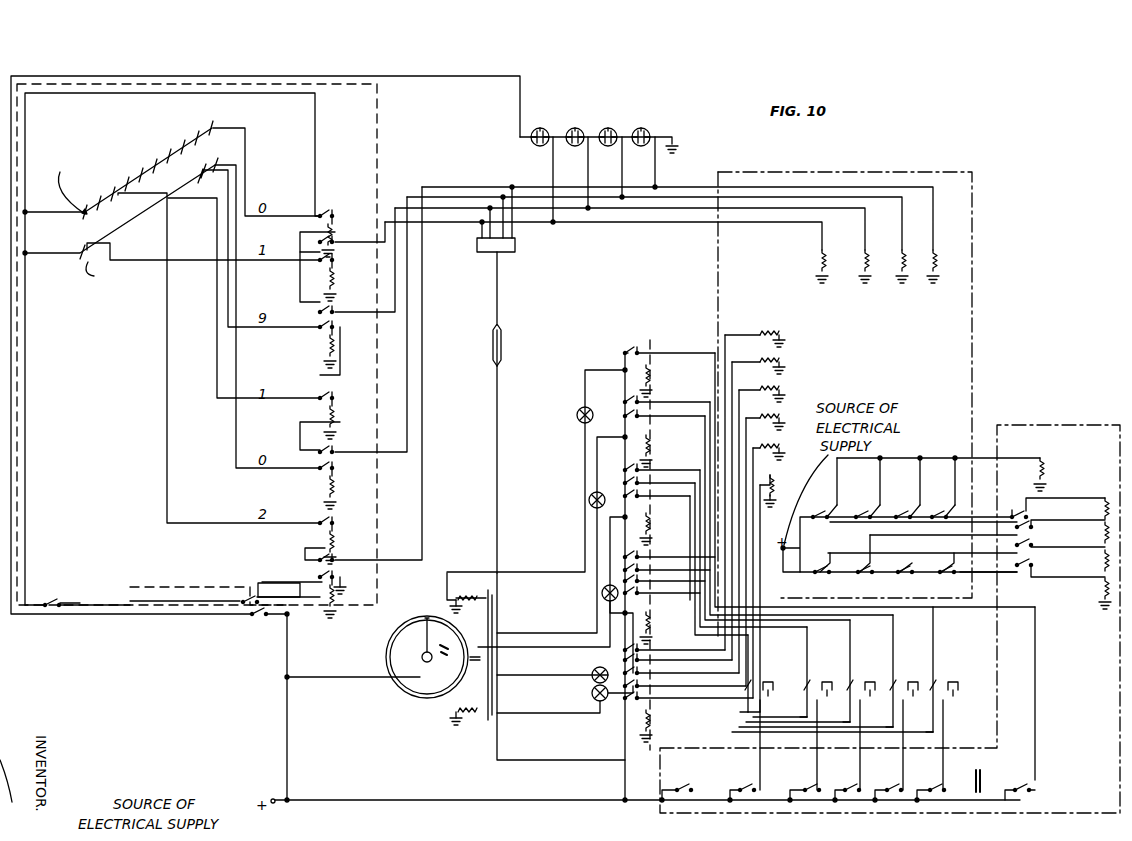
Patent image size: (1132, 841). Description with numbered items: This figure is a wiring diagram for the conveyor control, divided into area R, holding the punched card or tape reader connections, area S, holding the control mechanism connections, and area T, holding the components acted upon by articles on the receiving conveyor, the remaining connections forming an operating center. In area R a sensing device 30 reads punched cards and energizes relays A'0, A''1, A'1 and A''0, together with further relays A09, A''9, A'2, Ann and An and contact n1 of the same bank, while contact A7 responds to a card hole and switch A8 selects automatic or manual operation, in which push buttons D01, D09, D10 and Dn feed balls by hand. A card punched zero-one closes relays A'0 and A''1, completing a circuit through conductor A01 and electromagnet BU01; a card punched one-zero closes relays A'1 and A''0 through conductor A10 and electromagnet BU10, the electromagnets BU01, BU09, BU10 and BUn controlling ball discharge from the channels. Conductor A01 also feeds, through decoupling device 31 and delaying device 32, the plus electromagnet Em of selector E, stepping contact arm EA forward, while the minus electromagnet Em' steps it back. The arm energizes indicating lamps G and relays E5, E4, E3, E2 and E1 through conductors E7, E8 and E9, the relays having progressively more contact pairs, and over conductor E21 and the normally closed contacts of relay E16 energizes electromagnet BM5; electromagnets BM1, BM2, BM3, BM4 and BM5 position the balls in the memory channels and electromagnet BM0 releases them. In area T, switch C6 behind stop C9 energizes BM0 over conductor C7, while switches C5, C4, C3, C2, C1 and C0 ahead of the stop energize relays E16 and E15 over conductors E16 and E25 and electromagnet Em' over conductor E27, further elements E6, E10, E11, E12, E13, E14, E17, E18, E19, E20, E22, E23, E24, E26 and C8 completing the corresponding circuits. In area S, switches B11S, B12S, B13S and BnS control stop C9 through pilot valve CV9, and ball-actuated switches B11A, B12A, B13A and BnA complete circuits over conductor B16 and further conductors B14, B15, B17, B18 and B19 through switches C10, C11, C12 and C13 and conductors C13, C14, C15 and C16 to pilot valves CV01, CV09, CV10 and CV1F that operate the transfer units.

The area R is at (90, 417).
The sensing device 30 is at (186, 187).
The decoupling device 31 is at (476, 259).
The delaying device 32 is at (490, 346).
The relay A'0 is at (344, 233).
The conductor A01 is at (525, 239).
The relay A''1 is at (345, 274).
The relay contact A09 is at (573, 225).
The relay A''9 is at (345, 345).
The relay A'1 is at (344, 413).
The conductor A10 is at (608, 213).
The relay A''0 is at (345, 484).
The relay A'2 is at (344, 535).
The relay contact Ann is at (650, 197).
The relay An is at (342, 594).
The contact n1 is at (292, 574).
The contact A7 is at (77, 593).
The switch A8 is at (245, 599).
The push button D01 is at (538, 162).
The push button D09 is at (575, 155).
The push button D10 is at (614, 149).
The push button Dn is at (646, 144).
The electromagnet BU01 is at (808, 275).
The electromagnet BU09 is at (857, 275).
The electromagnet BU10 is at (907, 275).
The electromagnet BUn is at (945, 275).
The area S is at (893, 340).
The electromagnet BM1 is at (775, 339).
The electromagnet BM2 is at (778, 366).
The electromagnet BM3 is at (782, 394).
The electromagnet BM4 is at (785, 422).
The electromagnet BM5 is at (789, 452).
The electromagnet BM0 is at (789, 491).
The bus line B15 is at (938, 474).
The switch B11S is at (842, 507).
The switch B12S is at (885, 507).
The switch B13S is at (925, 507).
The switch BnS is at (956, 507).
The switch B11A is at (821, 559).
The switch B12A is at (861, 554).
The switch B13A is at (906, 558).
The switch BnA is at (944, 572).
The line B14 is at (799, 574).
The conductor B16 is at (923, 517).
The line B17 is at (943, 533).
The line B18 is at (922, 550).
The line B19 is at (988, 569).
The solenoid operated pilot air control valve CV9 is at (1057, 474).
The switch C10 is at (1024, 512).
The switch C11 is at (1031, 528).
The switch C12 is at (1031, 546).
The switch C13 is at (1031, 566).
The line C14 is at (1068, 522).
The line C15 is at (1068, 548).
The line C16 is at (1068, 576).
The solenoid operated pilot air control valve CV01 is at (1071, 504).
The solenoid operated pilot air control valve CV09 is at (1093, 528).
The solenoid operated pilot air control valve CV10 is at (1093, 555).
The solenoid operated pilot air control valve CV1F is at (1093, 590).
The area T is at (1083, 676).
The conductor C7 is at (1035, 736).
The supply line C8 is at (647, 796).
The stop C9 is at (989, 781).
The switch C0 is at (687, 793).
The switch C1 is at (751, 793).
The switch C2 is at (808, 793).
The switch C3 is at (851, 793).
The switch C4 is at (892, 793).
The switch C5 is at (937, 793).
The switch C6 is at (1022, 796).
The selector E is at (401, 701).
The contact arm EA is at (422, 641).
The PLUS electromagnet Em is at (454, 646).
The MINUS electromagnet Em' is at (454, 728).
The indicating lamps G is at (596, 666).
The relay E1 is at (655, 726).
The relay E2 is at (655, 626).
The relay E3 is at (655, 526).
The relay E4 is at (655, 448).
The relay E5 is at (655, 378).
The line E6 is at (500, 362).
The conductor E7 is at (536, 463).
The conductor E8 is at (561, 526).
The conductor E9 is at (553, 576).
The line E10 is at (565, 655).
The line E11 is at (570, 693).
The relay E12 is at (765, 673).
The relay E13 is at (822, 672).
The relay E14 is at (866, 671).
The relay E15 is at (908, 671).
The relay E16 is at (950, 669).
The contact E17 is at (733, 708).
The contact E18 is at (791, 708).
The contact E19 is at (841, 711).
The contact E20 is at (881, 713).
The conductor E21 is at (923, 716).
The line E22 is at (777, 745).
The line E23 is at (831, 745).
The line E24 is at (876, 745).
The conductor E25 is at (919, 745).
The line E26 is at (959, 745).
The conductor E27 is at (561, 670).